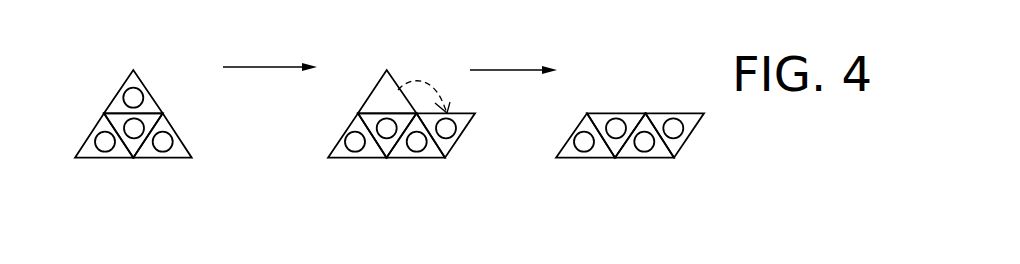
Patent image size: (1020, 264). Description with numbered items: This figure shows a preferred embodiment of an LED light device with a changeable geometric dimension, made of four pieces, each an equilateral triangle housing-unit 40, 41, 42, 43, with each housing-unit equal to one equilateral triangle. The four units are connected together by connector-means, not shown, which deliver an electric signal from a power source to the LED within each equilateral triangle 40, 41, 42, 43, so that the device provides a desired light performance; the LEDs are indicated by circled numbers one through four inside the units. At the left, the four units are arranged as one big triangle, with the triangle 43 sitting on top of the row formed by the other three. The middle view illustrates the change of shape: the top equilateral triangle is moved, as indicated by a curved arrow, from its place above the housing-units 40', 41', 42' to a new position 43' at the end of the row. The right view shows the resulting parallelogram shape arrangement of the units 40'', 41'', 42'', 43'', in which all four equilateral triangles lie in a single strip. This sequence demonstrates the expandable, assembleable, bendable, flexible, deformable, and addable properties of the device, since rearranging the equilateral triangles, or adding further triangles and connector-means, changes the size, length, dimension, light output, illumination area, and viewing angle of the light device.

The equilateral triangle housing-unit 40 is at (96, 159).
The equilateral triangle housing-unit 41 is at (161, 120).
The equilateral triangle housing-unit 42 is at (184, 135).
The equilateral triangle housing-unit 43 is at (143, 79).
The equilateral triangle housing-unit in intermediate position 40' is at (351, 159).
The equilateral triangle housing-unit in intermediate position 41' is at (356, 123).
The equilateral triangle housing-unit in intermediate position 42' is at (414, 163).
The new position of the fourth equilateral triangle 43' is at (447, 163).
The equilateral triangle housing-unit in parallelogram arrangement 40'' is at (569, 123).
The equilateral triangle housing-unit in parallelogram arrangement 41'' is at (617, 103).
The equilateral triangle housing-unit in parallelogram arrangement 42'' is at (650, 164).
The equilateral triangle housing-unit in parallelogram arrangement 43'' is at (717, 135).